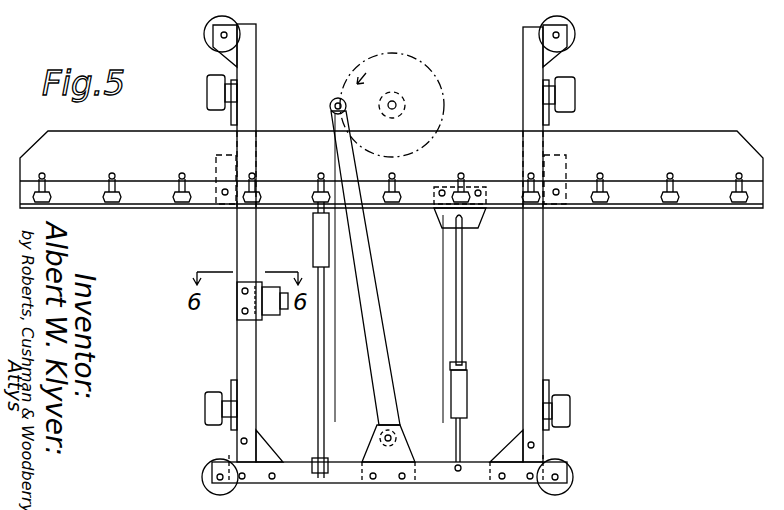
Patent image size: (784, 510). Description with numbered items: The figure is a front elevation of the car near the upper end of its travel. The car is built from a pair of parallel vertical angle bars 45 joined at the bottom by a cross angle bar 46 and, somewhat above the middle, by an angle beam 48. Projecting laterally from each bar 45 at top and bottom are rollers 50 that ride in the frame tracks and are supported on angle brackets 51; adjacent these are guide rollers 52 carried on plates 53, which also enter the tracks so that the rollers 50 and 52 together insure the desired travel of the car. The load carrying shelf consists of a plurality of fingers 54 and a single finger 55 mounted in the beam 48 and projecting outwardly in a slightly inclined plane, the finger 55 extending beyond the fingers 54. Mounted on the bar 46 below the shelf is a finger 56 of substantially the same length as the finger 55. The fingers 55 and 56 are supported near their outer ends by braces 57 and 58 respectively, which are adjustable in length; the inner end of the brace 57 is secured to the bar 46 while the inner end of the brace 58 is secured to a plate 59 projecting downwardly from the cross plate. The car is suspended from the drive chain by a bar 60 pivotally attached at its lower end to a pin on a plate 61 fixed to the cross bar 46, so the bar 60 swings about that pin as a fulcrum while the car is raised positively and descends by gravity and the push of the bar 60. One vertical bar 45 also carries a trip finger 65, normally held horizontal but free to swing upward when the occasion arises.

The vertical angle bars 45 is at (543, 308).
The cross angle bar 46 is at (353, 477).
The angle beam 48 is at (718, 195).
The rollers 50 is at (568, 468).
The angle brackets 51 is at (560, 450).
The guide rollers 52 is at (571, 400).
The plates 53 is at (547, 380).
The fingers 54 is at (669, 174).
The single finger 55 is at (321, 174).
The finger 56 is at (456, 473).
The brace 57 is at (318, 353).
The brace 58 is at (462, 326).
The plate 59 is at (473, 228).
The bar 60 is at (382, 380).
The plate 61 is at (377, 443).
The trip finger 65 is at (266, 285).